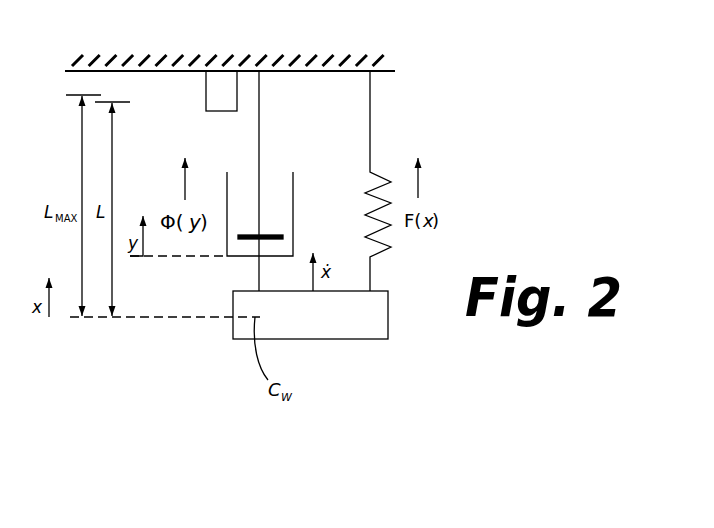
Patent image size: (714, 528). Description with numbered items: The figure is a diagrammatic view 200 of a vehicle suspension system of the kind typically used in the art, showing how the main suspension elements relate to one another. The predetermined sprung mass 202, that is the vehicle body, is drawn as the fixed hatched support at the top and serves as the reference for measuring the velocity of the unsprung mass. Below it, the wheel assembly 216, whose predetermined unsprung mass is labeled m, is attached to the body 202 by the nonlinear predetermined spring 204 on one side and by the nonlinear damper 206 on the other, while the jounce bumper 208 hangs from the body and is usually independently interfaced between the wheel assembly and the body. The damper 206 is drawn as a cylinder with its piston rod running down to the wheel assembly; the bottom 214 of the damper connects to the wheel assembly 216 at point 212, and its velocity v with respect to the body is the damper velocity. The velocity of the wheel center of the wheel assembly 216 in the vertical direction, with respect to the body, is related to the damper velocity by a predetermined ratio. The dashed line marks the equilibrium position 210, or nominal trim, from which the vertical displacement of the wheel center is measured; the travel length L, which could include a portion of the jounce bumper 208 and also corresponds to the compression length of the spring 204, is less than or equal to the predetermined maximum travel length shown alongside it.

The diagrammatic view 200 is at (496, 117).
The predetermined sprung mass 202 is at (395, 73).
The nonlinear predetermined spring 204 is at (385, 240).
The nonlinear damper 206 is at (296, 208).
The jounce bumper 208 is at (206, 96).
The equilibrium position 210 is at (145, 317).
The connection point 212 is at (259, 284).
The bottom of damper 214 is at (240, 258).
The wheel assembly 216 is at (388, 320).